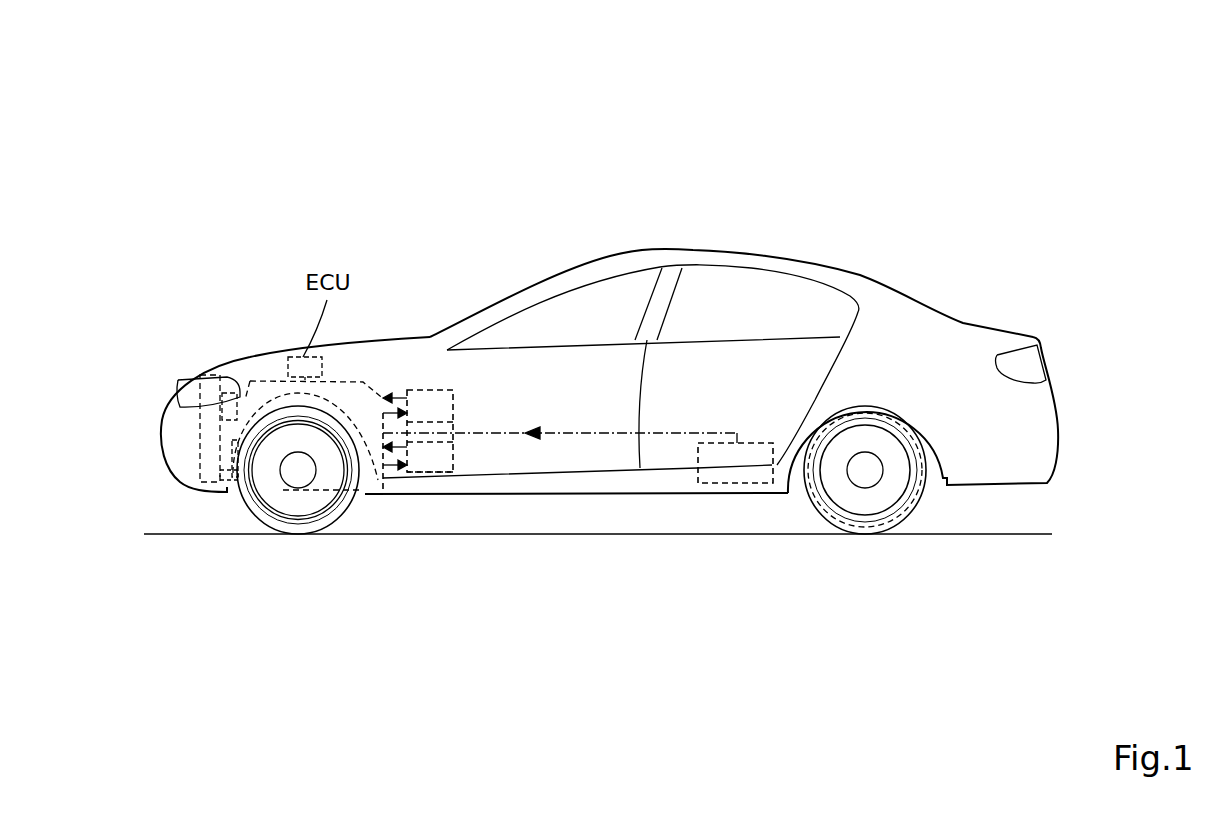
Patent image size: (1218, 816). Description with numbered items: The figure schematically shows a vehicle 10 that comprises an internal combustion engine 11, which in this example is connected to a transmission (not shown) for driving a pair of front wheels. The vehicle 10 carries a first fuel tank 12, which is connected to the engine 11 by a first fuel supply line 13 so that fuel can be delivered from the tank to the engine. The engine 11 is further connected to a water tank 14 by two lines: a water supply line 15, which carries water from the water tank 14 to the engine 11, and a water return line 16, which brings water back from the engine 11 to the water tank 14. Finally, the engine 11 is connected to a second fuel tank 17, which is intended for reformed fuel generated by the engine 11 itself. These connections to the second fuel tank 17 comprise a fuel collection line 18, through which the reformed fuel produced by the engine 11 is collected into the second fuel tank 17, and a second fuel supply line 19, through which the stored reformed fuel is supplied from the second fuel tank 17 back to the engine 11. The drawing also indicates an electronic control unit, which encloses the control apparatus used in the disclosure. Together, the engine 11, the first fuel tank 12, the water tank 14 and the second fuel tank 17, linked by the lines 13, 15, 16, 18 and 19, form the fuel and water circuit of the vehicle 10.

The vehicle 10 is at (710, 170).
The internal combustion engine 11 is at (338, 393).
The first fuel tank 12 is at (742, 483).
The first fuel supply line 13 is at (593, 433).
The water tank 14 is at (452, 393).
The water supply line 15 is at (408, 412).
The water return line 16 is at (397, 398).
The second fuel tank 17 is at (447, 473).
The fuel collection line 18 is at (382, 495).
The second fuel supply line 19 is at (397, 447).